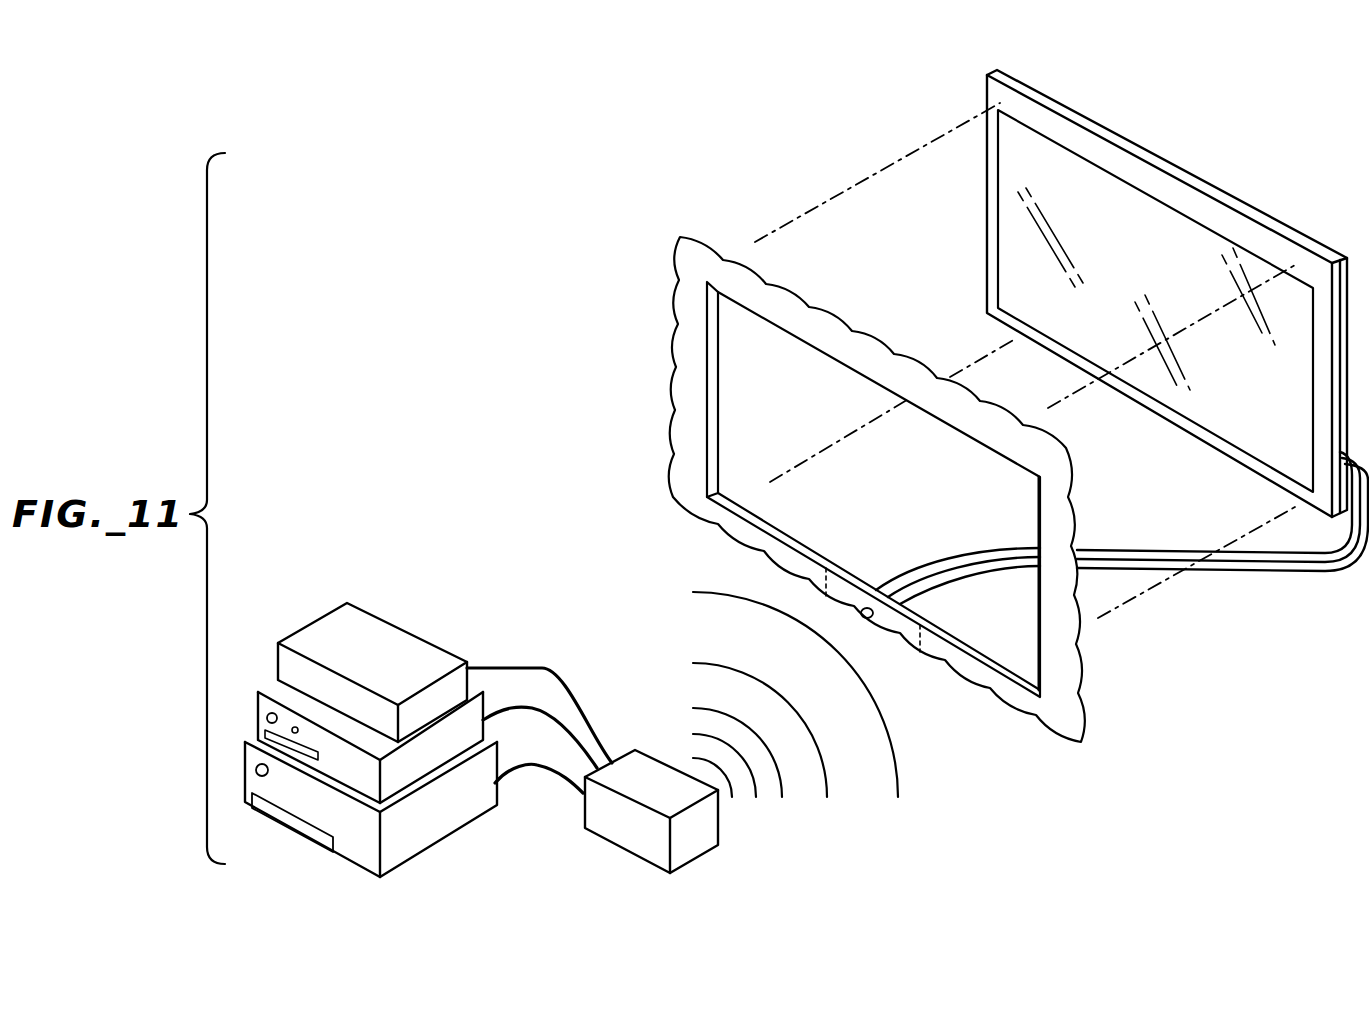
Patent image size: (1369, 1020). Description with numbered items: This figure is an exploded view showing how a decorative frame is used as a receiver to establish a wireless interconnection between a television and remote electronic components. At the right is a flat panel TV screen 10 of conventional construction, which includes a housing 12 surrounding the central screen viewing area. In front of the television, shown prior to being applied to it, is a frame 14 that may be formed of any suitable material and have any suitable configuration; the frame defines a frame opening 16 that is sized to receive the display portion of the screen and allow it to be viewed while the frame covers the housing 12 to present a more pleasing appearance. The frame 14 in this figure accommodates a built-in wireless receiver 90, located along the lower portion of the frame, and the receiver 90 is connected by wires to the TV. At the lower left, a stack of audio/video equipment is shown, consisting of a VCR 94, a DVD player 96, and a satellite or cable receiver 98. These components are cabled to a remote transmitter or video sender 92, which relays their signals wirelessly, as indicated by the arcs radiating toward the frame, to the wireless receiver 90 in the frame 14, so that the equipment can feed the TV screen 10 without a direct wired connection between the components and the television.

The flat panel TV screen 10 is at (1017, 242).
The housing 12 is at (997, 202).
The frame 14 is at (853, 489).
The frame opening 16 is at (713, 367).
The wireless receiver 90 is at (898, 640).
The video sender 92 is at (695, 837).
The VCR 94 is at (443, 812).
The DVD player 96 is at (258, 718).
The cable receiver 98 is at (363, 648).